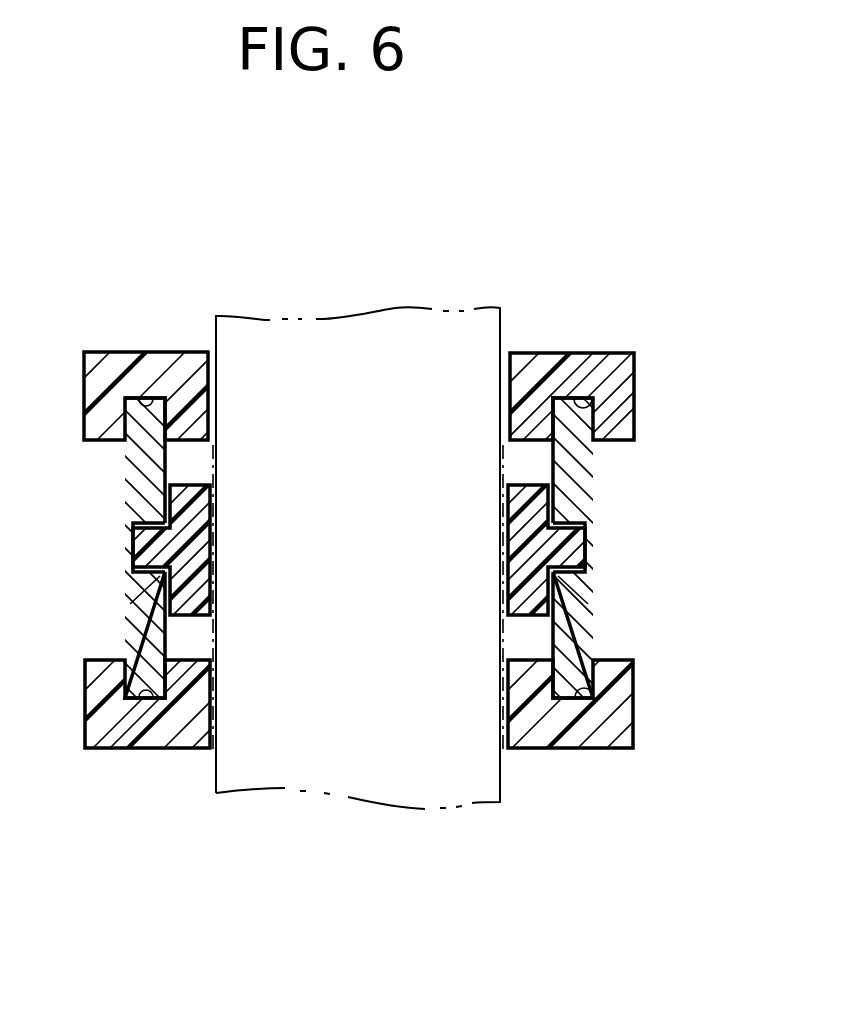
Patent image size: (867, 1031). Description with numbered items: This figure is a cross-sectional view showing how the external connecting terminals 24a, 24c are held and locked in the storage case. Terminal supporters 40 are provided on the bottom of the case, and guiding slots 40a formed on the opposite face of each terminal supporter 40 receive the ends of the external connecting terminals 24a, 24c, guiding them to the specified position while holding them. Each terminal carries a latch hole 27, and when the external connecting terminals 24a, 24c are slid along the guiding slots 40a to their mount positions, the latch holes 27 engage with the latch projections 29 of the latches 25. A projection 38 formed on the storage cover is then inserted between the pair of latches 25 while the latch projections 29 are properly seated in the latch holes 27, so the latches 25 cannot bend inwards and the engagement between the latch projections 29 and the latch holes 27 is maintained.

The projection 38 is at (407, 308).
The terminal supporter 40 is at (175, 352).
The guiding slot 40a is at (146, 402).
The external connecting terminal 24a is at (125, 594).
The external connecting terminal 24c is at (597, 600).
The latch 25 is at (155, 560).
The latch hole 27 is at (125, 548).
The latch projection 29 is at (155, 583).